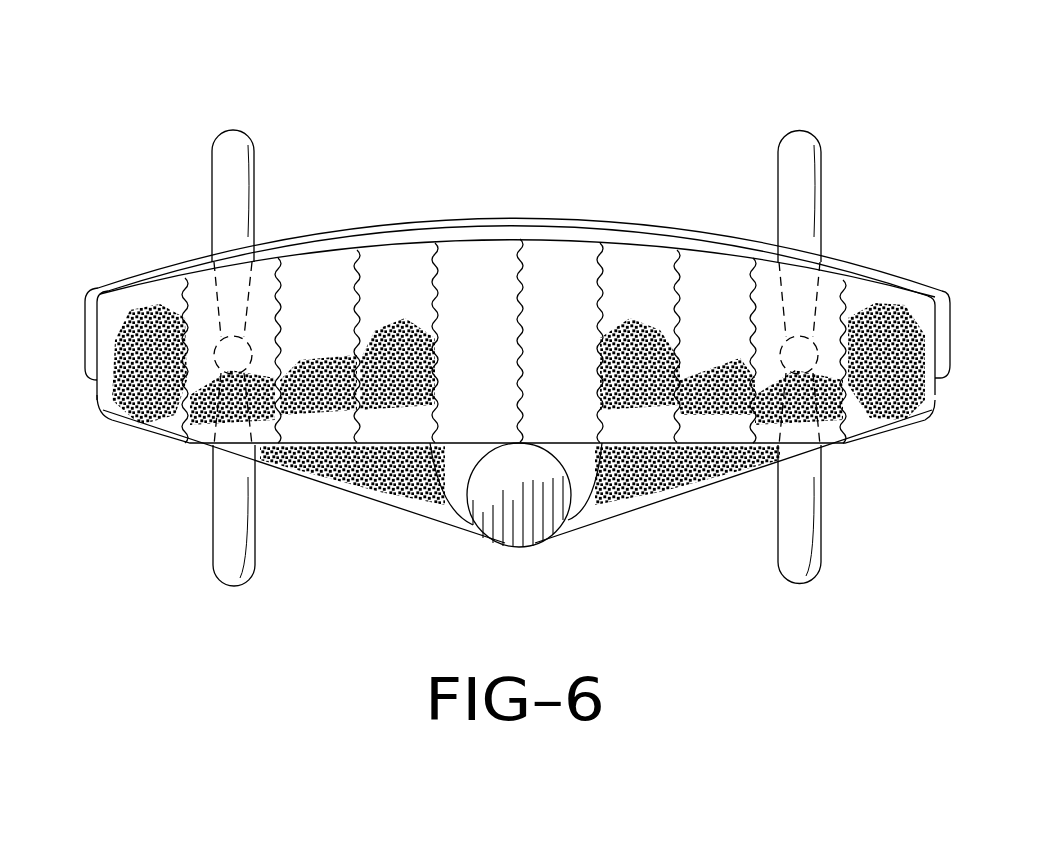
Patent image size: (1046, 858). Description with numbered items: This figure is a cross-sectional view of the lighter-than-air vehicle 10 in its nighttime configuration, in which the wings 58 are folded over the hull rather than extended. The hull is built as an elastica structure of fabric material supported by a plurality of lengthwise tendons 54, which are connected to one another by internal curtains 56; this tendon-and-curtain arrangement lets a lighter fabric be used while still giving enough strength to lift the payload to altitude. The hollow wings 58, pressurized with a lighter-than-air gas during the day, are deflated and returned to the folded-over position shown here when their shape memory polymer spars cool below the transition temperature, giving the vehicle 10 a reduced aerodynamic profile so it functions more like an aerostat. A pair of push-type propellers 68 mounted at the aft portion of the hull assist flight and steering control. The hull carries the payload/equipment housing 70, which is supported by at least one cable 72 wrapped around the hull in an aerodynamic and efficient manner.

The vehicle 10 is at (99, 132).
The lengthwise tendons 54 is at (547, 338).
The internal curtains 56 is at (190, 348).
The wings 58 is at (402, 223).
The propellers 68 is at (255, 172).
The payload/equipment housing 70 is at (522, 482).
The cable 72 is at (348, 495).